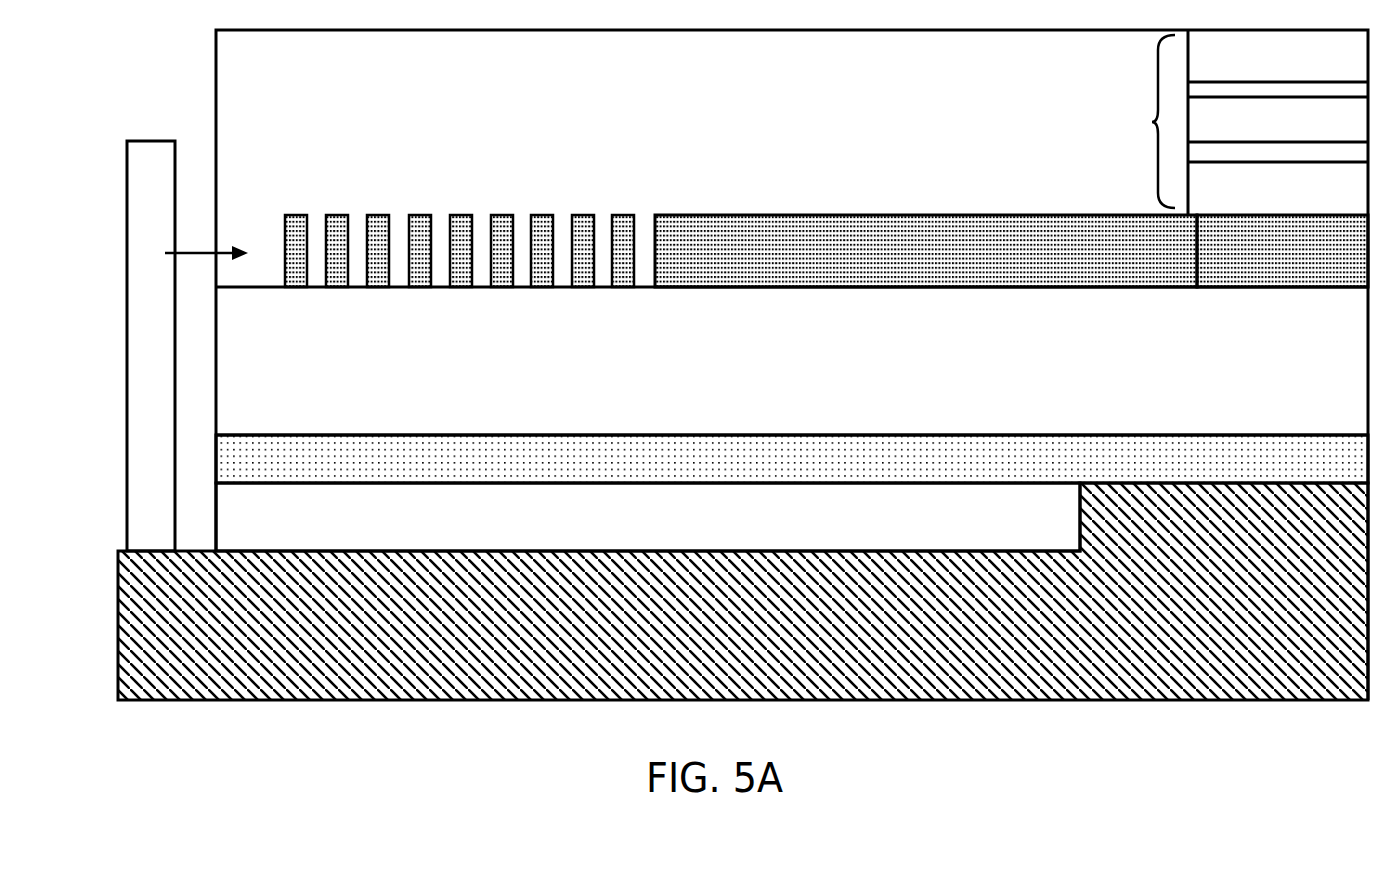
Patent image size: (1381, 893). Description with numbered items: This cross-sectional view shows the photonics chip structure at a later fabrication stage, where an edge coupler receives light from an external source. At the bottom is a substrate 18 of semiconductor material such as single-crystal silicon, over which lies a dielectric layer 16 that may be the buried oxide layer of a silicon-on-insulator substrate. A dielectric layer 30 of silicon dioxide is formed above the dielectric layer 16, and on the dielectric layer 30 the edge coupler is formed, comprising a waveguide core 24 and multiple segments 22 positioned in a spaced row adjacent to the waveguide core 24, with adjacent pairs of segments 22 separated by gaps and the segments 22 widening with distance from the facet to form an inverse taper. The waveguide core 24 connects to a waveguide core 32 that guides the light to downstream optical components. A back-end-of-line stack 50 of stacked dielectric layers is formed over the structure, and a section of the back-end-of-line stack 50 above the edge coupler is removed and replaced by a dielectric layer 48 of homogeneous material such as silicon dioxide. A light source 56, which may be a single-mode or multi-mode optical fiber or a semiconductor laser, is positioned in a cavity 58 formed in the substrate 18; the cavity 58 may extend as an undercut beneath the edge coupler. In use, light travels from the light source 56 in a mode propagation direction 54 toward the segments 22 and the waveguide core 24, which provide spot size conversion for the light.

The dielectric layer 16 is at (257, 465).
The substrate 18 is at (200, 628).
The segments 22 is at (338, 230).
The waveguide core 24 is at (913, 243).
The dielectric layer 30 is at (245, 395).
The waveguide core 32 is at (1320, 238).
The dielectric layer 48 is at (295, 60).
The back-end-of-line stack 50 is at (1152, 122).
The mode propagation direction 54 is at (194, 253).
The light source 56 is at (145, 190).
The cavity 58 is at (225, 530).